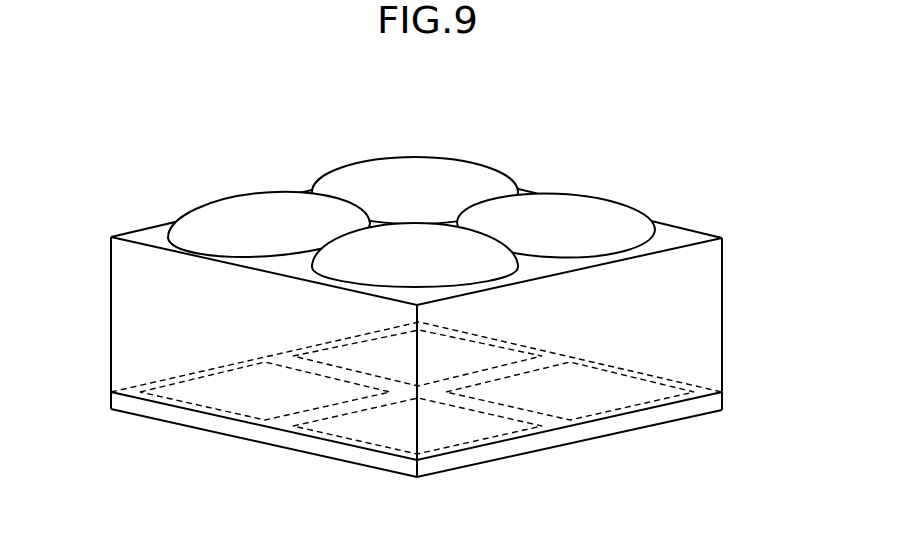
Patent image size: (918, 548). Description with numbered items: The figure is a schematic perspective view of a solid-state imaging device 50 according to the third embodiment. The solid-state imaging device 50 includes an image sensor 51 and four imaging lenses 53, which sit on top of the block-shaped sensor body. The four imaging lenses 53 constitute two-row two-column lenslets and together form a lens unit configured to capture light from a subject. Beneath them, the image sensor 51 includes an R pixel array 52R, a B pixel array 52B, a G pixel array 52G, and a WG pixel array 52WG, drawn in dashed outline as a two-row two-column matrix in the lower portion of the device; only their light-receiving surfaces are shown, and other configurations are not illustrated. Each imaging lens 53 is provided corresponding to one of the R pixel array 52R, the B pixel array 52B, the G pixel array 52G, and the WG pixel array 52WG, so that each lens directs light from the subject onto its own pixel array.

The solid-state imaging device 50 is at (482, 98).
The image sensor 51 is at (122, 405).
The G pixel array 52G is at (210, 395).
The R pixel array 52R is at (490, 358).
The B pixel array 52B is at (478, 427).
The WG pixel array 52WG is at (622, 395).
The imaging lens 53 is at (608, 214).